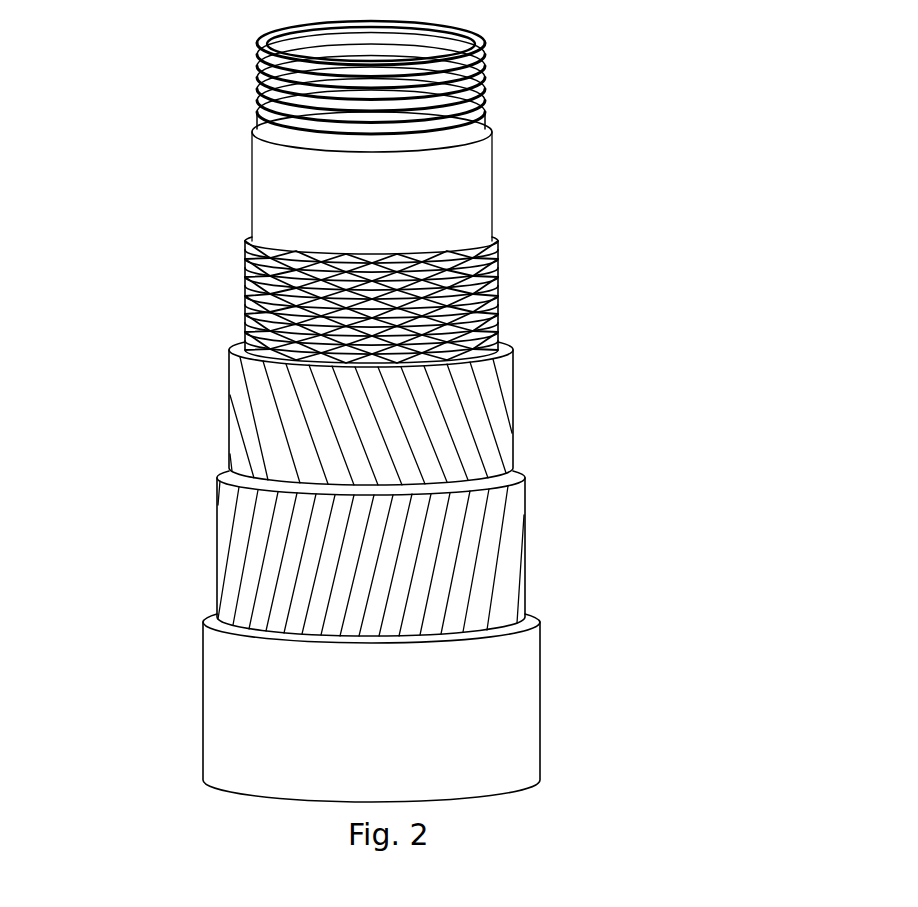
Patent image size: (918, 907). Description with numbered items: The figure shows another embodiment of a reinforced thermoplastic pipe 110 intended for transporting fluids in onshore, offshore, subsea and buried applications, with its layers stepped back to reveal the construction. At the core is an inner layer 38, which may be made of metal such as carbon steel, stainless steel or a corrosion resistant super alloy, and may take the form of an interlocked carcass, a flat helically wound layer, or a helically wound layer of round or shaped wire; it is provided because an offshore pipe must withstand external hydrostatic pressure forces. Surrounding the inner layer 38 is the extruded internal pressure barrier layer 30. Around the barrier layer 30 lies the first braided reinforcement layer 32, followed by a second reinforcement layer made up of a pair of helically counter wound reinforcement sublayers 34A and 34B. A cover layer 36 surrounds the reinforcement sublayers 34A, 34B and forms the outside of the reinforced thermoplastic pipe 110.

The reinforced thermoplastic pipe 110 is at (143, 382).
The inner layer 38 is at (487, 80).
The barrier layer 30 is at (493, 187).
The first reinforcement layer 32 is at (502, 292).
The first reinforcement sublayer 34A is at (515, 410).
The second reinforcement sublayer 34B is at (528, 543).
The cover layer 36 is at (543, 697).